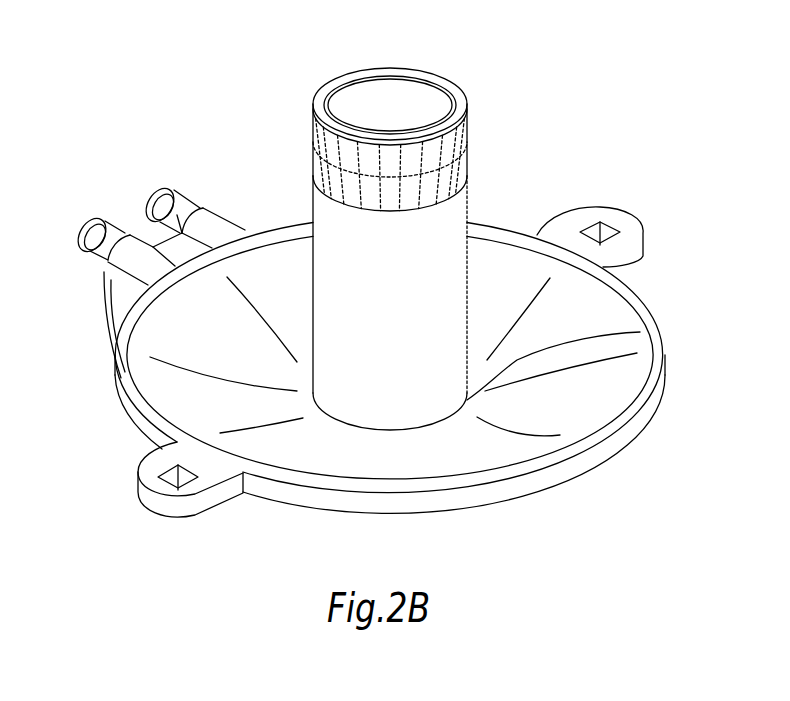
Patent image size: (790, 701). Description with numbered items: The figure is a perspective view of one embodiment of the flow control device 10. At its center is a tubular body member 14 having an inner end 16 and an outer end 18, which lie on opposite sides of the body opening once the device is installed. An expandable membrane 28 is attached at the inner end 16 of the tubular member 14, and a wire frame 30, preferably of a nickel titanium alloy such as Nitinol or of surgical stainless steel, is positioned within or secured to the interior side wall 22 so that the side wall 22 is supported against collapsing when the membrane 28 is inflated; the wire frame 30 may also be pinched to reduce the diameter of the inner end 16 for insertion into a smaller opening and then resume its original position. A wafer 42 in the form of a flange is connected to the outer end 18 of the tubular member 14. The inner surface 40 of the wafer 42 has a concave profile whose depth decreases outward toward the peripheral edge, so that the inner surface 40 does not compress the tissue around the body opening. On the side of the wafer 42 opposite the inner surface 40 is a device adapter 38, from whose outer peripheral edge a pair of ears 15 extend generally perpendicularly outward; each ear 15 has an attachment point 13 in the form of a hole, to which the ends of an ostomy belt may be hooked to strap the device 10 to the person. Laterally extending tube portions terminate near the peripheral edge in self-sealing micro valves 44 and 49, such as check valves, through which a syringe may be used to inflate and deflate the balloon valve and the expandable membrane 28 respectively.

The flow control device 10 is at (601, 74).
The attachment point 13 is at (602, 229).
The tubular body member 14 is at (458, 214).
The ear 15 is at (628, 239).
The inner end 16 is at (460, 96).
The outer end 18 is at (640, 332).
The interior side wall 22 is at (343, 93).
The expandable membrane 28 is at (470, 147).
The wire frame 30 is at (318, 143).
The device adapter 38 is at (650, 411).
The inner surface 40 is at (590, 312).
The wafer 42 is at (133, 393).
The self-sealing micro valve 44 is at (185, 203).
The self-sealing micro valve 49 is at (100, 252).